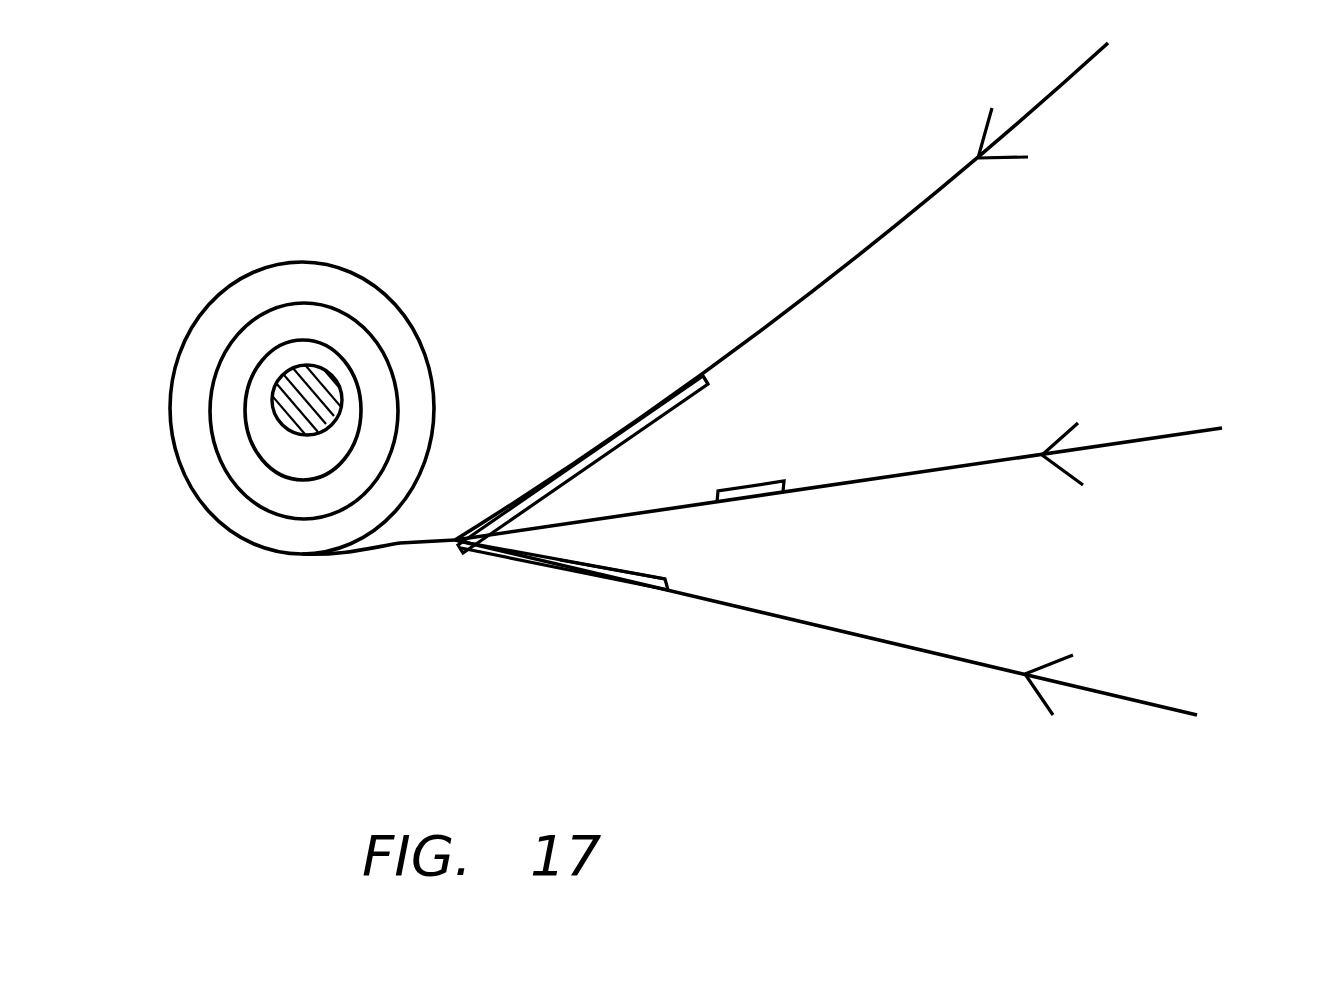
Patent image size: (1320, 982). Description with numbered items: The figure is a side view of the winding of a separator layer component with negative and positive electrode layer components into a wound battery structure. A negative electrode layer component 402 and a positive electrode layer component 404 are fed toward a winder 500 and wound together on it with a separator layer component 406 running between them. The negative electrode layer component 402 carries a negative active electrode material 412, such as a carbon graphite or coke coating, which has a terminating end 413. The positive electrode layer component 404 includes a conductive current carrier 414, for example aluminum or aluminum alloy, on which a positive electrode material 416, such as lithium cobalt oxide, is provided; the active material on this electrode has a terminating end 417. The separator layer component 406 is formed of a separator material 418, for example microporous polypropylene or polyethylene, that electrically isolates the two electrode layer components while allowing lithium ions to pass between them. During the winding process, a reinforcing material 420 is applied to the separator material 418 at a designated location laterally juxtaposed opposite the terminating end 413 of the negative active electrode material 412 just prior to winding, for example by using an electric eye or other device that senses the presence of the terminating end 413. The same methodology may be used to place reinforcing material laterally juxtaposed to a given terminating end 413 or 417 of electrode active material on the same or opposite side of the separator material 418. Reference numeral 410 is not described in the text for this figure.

The negative electrode layer component 402 is at (1073, 86).
The positive electrode layer component 404 is at (1142, 698).
The separator layer component 406 is at (1162, 446).
The upper web 410 is at (833, 272).
The negative active electrode material 412 is at (623, 437).
The terminating end of negative active electrode material 413 is at (710, 377).
The conductive current carrier 414 is at (808, 623).
The positive electrode material 416 is at (630, 572).
The terminating end of electrode active material 417 is at (672, 590).
The separator material 418 is at (942, 468).
The reinforcing material 420 is at (752, 480).
The winder 500 is at (311, 389).